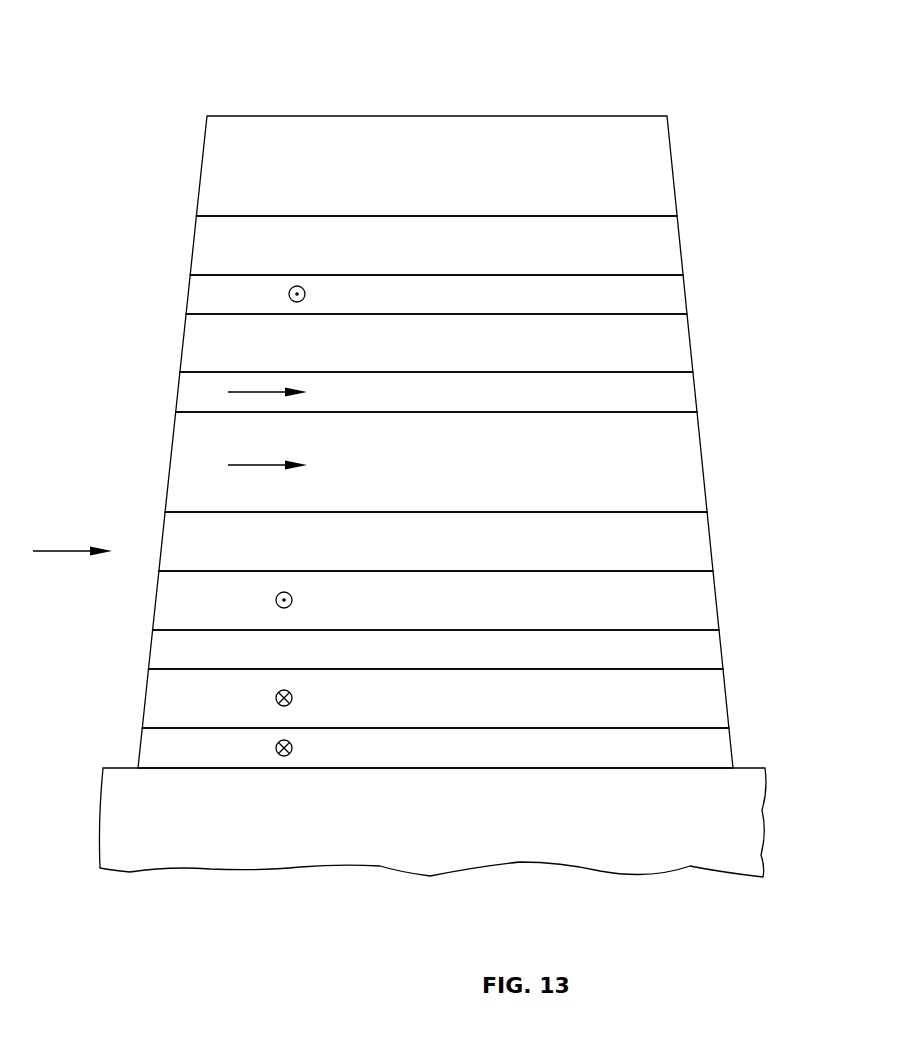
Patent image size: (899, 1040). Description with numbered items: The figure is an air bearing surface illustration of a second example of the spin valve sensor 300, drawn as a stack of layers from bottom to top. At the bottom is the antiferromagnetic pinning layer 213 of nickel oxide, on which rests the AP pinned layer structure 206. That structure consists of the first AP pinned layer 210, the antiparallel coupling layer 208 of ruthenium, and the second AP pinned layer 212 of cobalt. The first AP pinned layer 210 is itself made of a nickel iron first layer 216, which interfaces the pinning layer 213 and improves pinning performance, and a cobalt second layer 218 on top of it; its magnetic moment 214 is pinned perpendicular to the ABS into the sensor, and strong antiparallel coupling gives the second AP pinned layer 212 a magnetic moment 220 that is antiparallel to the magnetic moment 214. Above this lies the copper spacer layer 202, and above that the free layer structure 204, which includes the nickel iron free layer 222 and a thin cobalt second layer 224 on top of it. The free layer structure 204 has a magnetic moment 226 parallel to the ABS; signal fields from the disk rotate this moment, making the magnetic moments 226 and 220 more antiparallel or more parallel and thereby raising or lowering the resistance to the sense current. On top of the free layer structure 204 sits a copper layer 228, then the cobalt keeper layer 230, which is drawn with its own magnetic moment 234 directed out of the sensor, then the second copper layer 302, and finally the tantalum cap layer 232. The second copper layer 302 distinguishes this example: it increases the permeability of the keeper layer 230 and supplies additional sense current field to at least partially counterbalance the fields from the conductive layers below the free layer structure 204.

The spin valve sensor 300 is at (565, 65).
The cap layer 232 is at (668, 167).
The second copper layer 302 is at (677, 246).
The keeper layer 230 is at (682, 294).
The magnetic moment of keeper layer 234 is at (288, 295).
The copper layer 228 is at (687, 343).
The free layer structure 204 is at (91, 372).
The second layer 224 is at (692, 397).
The free layer 222 is at (699, 463).
The magnetic moment 226 is at (250, 391).
The spacer layer 202 is at (708, 549).
The AP pinned layer structure 206 is at (27, 571).
The second AP pinned layer 212 is at (713, 604).
The magnetic moment 220 is at (275, 600).
The antiparallel coupling layer 208 is at (718, 653).
The first AP pinned layer 210 is at (62, 669).
The second layer 218 is at (723, 697).
The first layer 216 is at (727, 743).
The magnetic moment 214 is at (276, 698).
The pinning layer 213 is at (761, 836).